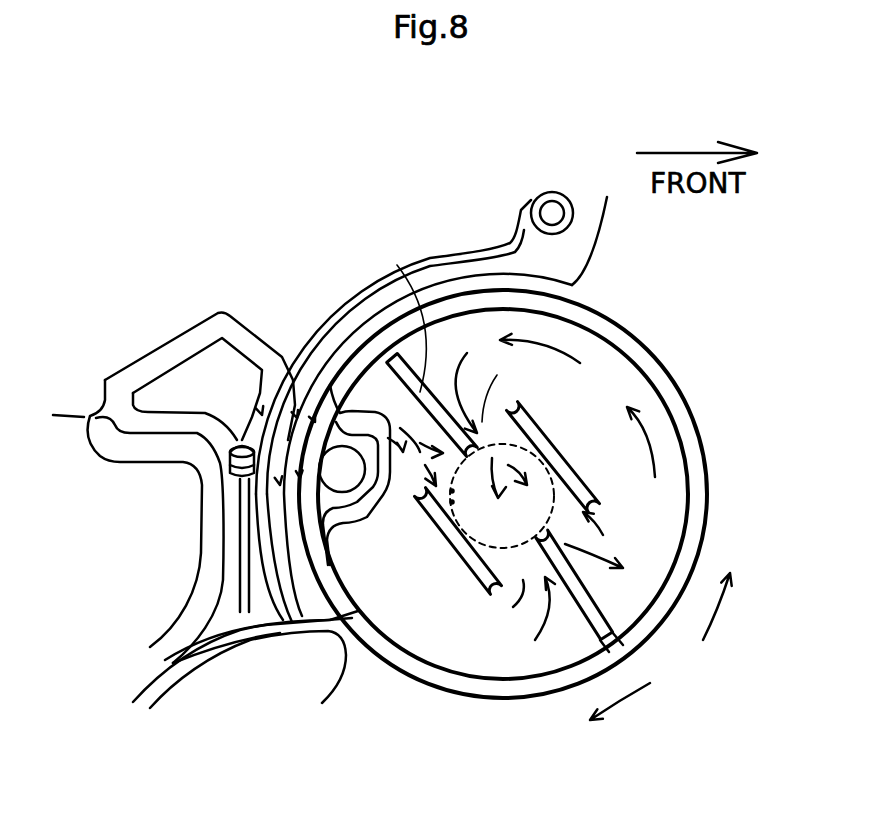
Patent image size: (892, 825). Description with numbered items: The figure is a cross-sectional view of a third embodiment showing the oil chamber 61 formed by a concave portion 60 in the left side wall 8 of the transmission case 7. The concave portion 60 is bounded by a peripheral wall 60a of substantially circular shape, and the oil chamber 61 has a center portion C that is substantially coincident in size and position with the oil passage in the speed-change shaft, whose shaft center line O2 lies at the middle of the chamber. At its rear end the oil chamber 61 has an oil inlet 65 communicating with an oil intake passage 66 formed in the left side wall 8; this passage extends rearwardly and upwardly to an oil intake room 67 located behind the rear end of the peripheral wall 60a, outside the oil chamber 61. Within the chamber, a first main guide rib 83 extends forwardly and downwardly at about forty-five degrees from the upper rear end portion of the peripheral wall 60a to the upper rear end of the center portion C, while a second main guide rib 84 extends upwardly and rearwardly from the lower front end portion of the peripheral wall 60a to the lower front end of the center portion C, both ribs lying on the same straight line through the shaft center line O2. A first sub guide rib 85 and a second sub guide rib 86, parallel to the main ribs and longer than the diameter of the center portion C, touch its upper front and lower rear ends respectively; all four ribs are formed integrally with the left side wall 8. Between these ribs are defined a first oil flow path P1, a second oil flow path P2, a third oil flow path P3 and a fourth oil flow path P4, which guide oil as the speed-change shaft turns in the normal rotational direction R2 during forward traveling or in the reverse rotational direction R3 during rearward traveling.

The transmission case 7 is at (315, 269).
The left side wall 8 is at (532, 463).
The concave portion 60 is at (532, 494).
The peripheral wall 60a is at (668, 393).
The oil chamber 61 is at (603, 366).
The oil inlet 65 is at (340, 462).
The oil intake passage 66 is at (300, 515).
The oil intake room 67 is at (203, 388).
The first main guide rib 83 is at (395, 345).
The second main guide rib 84 is at (590, 593).
The first sub guide rib 85 is at (570, 470).
The second sub guide rib 86 is at (487, 575).
The center portion C is at (500, 437).
The shaft center line O2 is at (514, 494).
The first oil flow path P1 is at (540, 366).
The second oil flow path P2 is at (523, 612).
The third oil flow path P3 is at (450, 523).
The fourth oil flow path P4 is at (575, 542).
The normal rotational direction R2 is at (747, 606).
The reverse rotational direction R3 is at (620, 727).